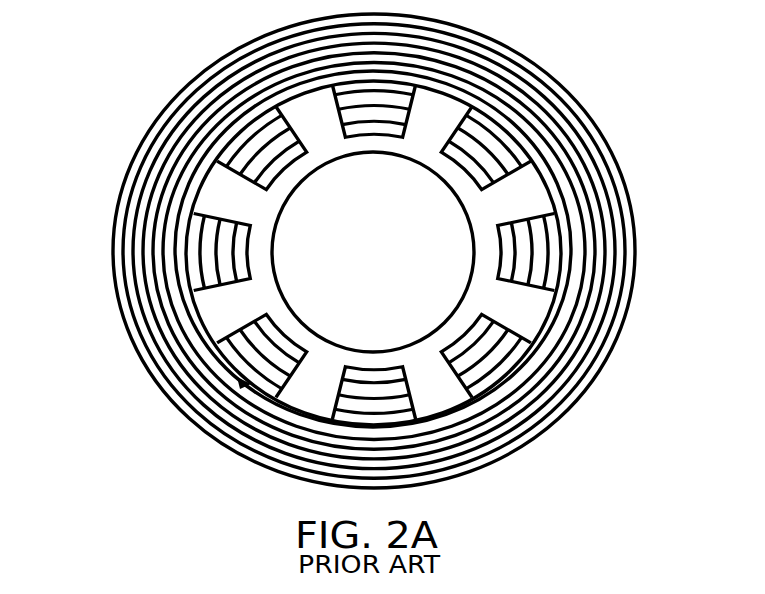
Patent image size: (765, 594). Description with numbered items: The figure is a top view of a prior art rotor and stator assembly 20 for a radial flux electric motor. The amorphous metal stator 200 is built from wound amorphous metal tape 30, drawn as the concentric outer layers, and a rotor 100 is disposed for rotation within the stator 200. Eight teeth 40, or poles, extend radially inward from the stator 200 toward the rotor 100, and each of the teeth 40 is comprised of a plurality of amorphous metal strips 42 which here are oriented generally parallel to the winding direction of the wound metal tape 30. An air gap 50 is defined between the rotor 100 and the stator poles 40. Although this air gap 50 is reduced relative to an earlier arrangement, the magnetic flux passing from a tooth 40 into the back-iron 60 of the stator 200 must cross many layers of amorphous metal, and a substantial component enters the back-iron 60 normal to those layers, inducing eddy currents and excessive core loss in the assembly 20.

The rotor and stator assembly 20 is at (92, 87).
The wound amorphous metal tape 30 is at (617, 267).
The teeth 40 is at (335, 389).
The amorphous metal strips 42 is at (411, 407).
The air gap 50 is at (370, 150).
The back-iron 60 is at (113, 262).
The rotor 100 is at (271, 282).
The amorphous metal stator 200 is at (612, 151).